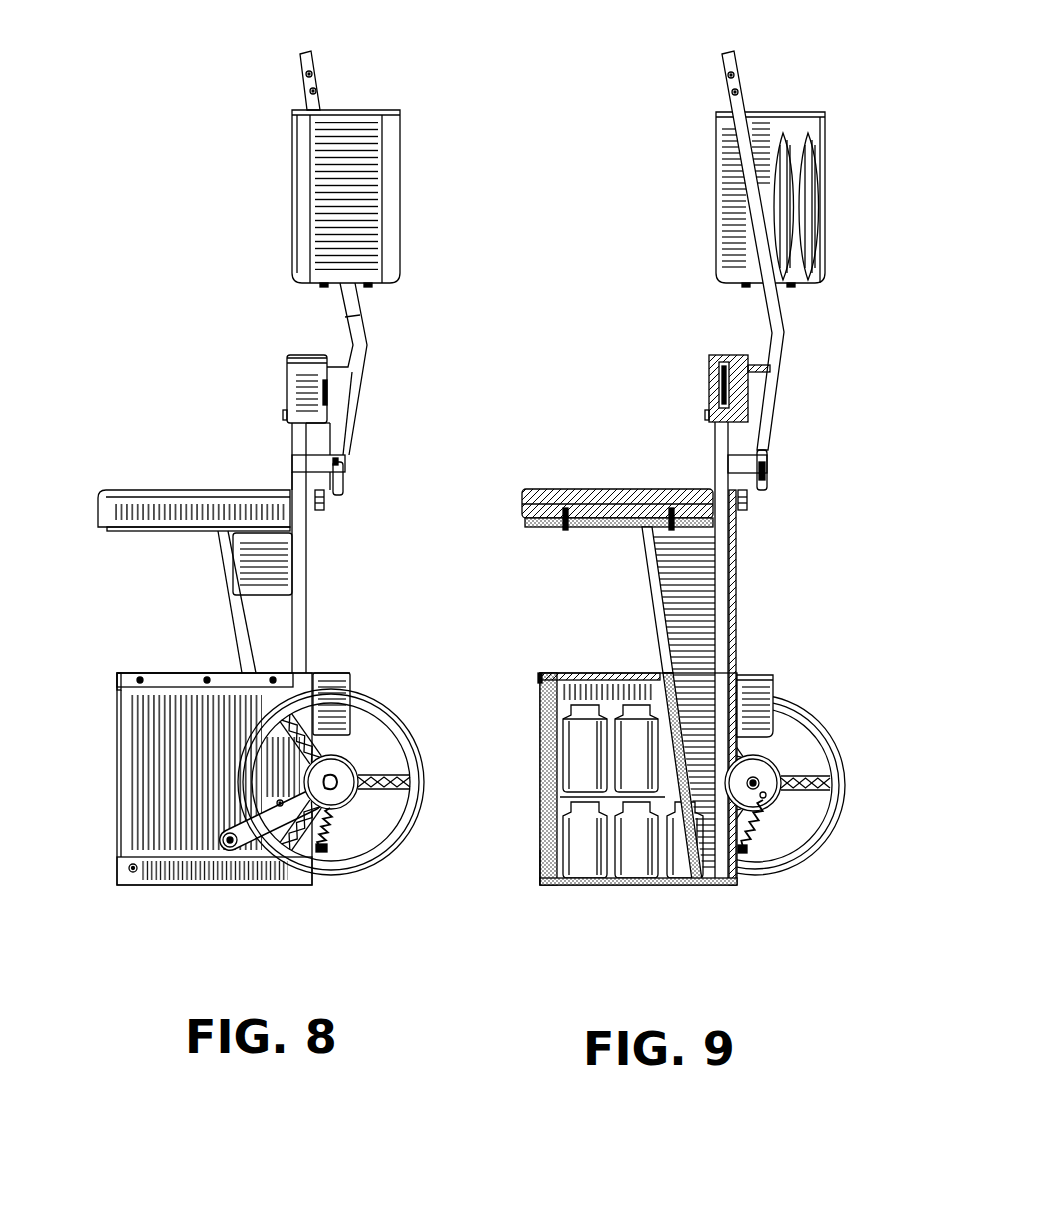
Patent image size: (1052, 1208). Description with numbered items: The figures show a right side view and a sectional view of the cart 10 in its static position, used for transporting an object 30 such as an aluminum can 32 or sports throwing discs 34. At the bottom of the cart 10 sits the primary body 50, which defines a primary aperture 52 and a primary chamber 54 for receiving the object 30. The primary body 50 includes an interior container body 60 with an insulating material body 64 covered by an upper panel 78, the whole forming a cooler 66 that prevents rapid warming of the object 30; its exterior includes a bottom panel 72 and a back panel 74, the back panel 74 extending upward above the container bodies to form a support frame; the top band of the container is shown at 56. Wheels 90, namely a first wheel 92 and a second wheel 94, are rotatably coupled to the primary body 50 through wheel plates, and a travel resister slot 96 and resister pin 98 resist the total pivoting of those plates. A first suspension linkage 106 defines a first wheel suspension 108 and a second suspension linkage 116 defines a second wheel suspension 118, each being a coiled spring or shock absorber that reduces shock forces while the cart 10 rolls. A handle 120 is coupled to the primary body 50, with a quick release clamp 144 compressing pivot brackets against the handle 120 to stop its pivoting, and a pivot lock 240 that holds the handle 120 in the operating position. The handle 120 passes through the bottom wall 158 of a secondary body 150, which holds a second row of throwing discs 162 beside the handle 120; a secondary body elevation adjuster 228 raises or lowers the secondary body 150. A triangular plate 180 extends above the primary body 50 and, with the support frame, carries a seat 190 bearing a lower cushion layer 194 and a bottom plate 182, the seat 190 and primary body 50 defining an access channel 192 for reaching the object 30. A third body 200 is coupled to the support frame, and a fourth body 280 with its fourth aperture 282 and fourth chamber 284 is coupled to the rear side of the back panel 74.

In FIG. 8, the cart 10 is at (450, 40).
In FIG. 9, the cart 10 is at (870, 42).
In FIG. 9, the object 30 is at (783, 135).
In FIG. 9, the aluminum can 32 is at (567, 722).
In FIG. 9, the sports throwing discs 34 is at (812, 172).
In FIG. 8, the primary body 50 is at (117, 755).
In FIG. 9, the primary body 50 is at (540, 836).
In FIG. 9, the primary aperture 52 is at (560, 672).
In FIG. 9, the primary chamber 54 is at (560, 790).
In FIG. 8, the container top band 56 is at (155, 673).
In FIG. 9, the interior container body 60 is at (557, 700).
In FIG. 9, the insulating material body 64 is at (548, 812).
In FIG. 8, the cooler 66 is at (117, 810).
In FIG. 9, the cooler 66 is at (540, 865).
In FIG. 8, the bottom panel 72 is at (135, 882).
In FIG. 9, the bottom panel 72 is at (590, 885).
In FIG. 8, the back panel 74 is at (312, 610).
In FIG. 9, the back panel 74 is at (736, 555).
In FIG. 9, the upper panel 78 is at (548, 675).
In FIG. 8, the wheels 90 is at (390, 862).
In FIG. 9, the wheels 90 is at (845, 798).
In FIG. 8, the first wheel 92 is at (413, 740).
In FIG. 9, the second wheel 94 is at (830, 830).
In FIG. 8, the travel resister slot 96 is at (280, 805).
In FIG. 8, the resister pin 98 is at (225, 830).
In FIG. 8, the first suspension linkage 106 is at (332, 830).
In FIG. 8, the first wheel suspension 108 is at (322, 850).
In FIG. 9, the second suspension linkage 116 is at (760, 850).
In FIG. 9, the second wheel suspension 118 is at (742, 855).
In FIG. 8, the handle 120 is at (362, 335).
In FIG. 9, the handle 120 is at (785, 340).
In FIG. 8, the quick release clamp 144 is at (342, 492).
In FIG. 8, the secondary body 150 is at (398, 165).
In FIG. 9, the secondary body 150 is at (825, 200).
In FIG. 8, the bottom wall 158 is at (382, 285).
In FIG. 9, the bottom wall 158 is at (735, 285).
In FIG. 9, the second row of throwing discs 162 is at (818, 130).
In FIG. 9, the triangular plate 180 is at (680, 575).
In FIG. 8, the shelf bottom plate 182 is at (145, 528).
In FIG. 9, the shelf bottom plate 182 is at (583, 530).
In FIG. 8, the seat 190 is at (185, 488).
In FIG. 9, the seat 190 is at (568, 488).
In FIG. 8, the access channel 192 is at (130, 605).
In FIG. 9, the lower cushion layer 194 is at (638, 488).
In FIG. 8, the third body 200 is at (245, 562).
In FIG. 8, the secondary body elevation adjuster 228 is at (292, 182).
In FIG. 8, the pivot lock 240 is at (286, 360).
In FIG. 9, the pivot lock 240 is at (709, 360).
In FIG. 8, the fourth body 280 is at (350, 675).
In FIG. 9, the fourth body 280 is at (775, 720).
In FIG. 9, the fourth aperture 282 is at (775, 690).
In FIG. 9, the fourth chamber 284 is at (762, 705).